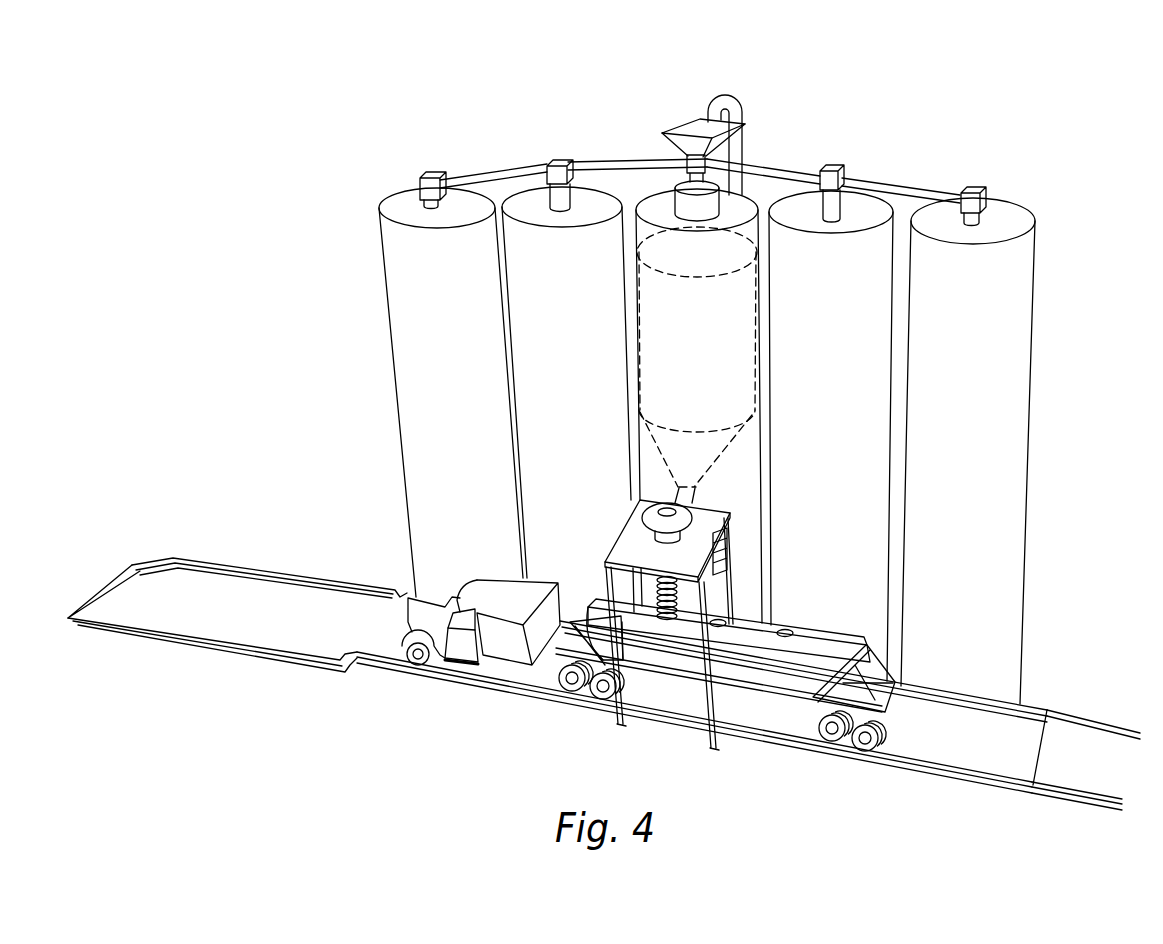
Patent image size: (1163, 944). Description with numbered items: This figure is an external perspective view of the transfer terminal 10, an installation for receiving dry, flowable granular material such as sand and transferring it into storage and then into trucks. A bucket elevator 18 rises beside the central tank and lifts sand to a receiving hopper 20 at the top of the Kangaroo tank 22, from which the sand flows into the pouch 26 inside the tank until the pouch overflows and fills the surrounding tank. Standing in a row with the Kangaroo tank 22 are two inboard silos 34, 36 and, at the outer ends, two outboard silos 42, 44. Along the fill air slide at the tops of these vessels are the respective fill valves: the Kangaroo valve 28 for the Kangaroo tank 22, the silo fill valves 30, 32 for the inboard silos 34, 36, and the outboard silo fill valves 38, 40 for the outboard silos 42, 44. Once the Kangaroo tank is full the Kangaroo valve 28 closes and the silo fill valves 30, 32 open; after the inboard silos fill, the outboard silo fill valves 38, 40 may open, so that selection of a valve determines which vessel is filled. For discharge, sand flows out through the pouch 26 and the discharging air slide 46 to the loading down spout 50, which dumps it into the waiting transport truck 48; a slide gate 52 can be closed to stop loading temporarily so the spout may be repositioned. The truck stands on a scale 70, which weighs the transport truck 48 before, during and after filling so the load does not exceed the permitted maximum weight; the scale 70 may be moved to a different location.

The transfer terminal 10 is at (945, 115).
The bucket elevator 18 is at (740, 106).
The receiving hopper 20 is at (686, 128).
The Kangaroo tank 22 is at (711, 354).
The pouch 26 is at (688, 229).
The Kangaroo valve 28 is at (690, 158).
The silo fill valve 30 is at (560, 160).
The silo fill valve 32 is at (838, 171).
The inboard silo 34 is at (592, 354).
The inboard silo 36 is at (845, 352).
The outboard silo fill valve 38 is at (430, 176).
The outboard silo fill valve 40 is at (977, 190).
The outboard silo 42 is at (472, 371).
The outboard silo 44 is at (981, 392).
The discharging air slide 46 is at (673, 492).
The transport truck 48 is at (674, 673).
The loading down spout 50 is at (661, 599).
The slide gate 52 is at (720, 558).
The scale 70 is at (774, 715).